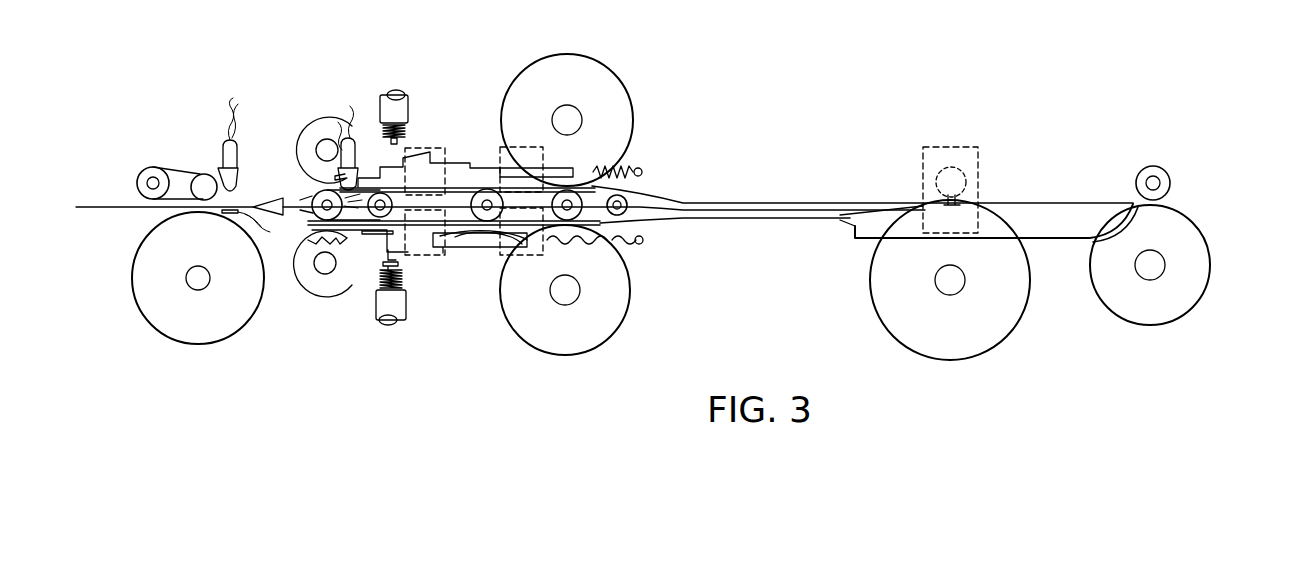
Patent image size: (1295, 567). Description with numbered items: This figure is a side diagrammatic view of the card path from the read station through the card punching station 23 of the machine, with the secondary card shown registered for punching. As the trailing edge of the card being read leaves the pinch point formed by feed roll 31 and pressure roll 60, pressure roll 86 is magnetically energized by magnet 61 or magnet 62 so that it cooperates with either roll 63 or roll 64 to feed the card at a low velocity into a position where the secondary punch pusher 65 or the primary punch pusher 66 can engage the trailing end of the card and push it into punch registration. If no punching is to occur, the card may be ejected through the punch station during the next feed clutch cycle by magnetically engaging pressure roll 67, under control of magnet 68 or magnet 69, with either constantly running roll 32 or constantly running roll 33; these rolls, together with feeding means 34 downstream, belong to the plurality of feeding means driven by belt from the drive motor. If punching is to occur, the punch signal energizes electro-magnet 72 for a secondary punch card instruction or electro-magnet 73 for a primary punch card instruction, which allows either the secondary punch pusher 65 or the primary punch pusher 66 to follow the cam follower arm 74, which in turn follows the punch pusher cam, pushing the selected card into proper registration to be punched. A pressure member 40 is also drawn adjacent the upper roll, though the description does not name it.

The card punching station 23 is at (995, 158).
The feed roll 31 is at (132, 290).
The constantly running roll 32 is at (623, 78).
The constantly running roll 33 is at (625, 318).
The feeding means 34 is at (1203, 233).
The upper pressure member 40 is at (350, 113).
The pressure roll 60 is at (193, 177).
The magnet 61 is at (423, 145).
The magnet 62 is at (417, 257).
The roll 63 is at (313, 120).
The roll 64 is at (313, 298).
The secondary punch pusher 65 is at (443, 160).
The primary punch pusher 66 is at (430, 257).
The pressure roll 67 is at (623, 193).
The magnet 68 is at (512, 300).
The magnet 69 is at (518, 147).
The electro-magnet 72 is at (412, 97).
The electro-magnet 73 is at (397, 320).
The cam follower arm 74 is at (510, 250).
The pressure roll 86 is at (300, 193).